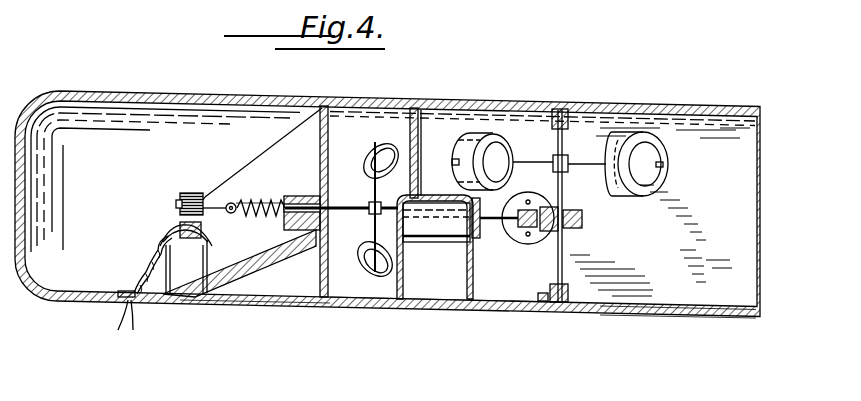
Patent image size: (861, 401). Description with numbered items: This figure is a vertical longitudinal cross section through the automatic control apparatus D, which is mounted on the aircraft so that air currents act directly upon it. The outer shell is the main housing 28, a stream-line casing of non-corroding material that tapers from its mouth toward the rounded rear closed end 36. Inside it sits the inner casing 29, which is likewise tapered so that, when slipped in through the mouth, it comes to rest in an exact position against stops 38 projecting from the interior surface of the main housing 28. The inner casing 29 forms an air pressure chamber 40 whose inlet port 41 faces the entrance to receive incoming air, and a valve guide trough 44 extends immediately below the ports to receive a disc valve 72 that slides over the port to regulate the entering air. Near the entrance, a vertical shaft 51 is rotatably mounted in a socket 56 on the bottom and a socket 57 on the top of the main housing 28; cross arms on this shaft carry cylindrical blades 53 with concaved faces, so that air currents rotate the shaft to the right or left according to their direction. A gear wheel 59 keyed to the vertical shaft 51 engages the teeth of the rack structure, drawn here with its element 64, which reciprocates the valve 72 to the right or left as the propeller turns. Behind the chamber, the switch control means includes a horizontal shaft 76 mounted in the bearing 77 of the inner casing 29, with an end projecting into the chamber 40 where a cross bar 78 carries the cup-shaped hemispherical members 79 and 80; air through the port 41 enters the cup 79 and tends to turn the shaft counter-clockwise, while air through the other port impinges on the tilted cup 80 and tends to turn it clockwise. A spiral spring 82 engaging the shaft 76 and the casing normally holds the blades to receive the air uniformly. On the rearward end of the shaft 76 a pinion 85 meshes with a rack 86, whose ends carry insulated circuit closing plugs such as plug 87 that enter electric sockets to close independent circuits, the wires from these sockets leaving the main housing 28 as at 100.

The main housing 28 is at (662, 318).
The inner casing 29 is at (448, 292).
The rear closed end 36 is at (30, 223).
The stops 38 is at (297, 92).
The air pressure chamber 40 is at (356, 282).
The inlet port 41 is at (437, 223).
The valve guide trough 44 is at (476, 242).
The vertical shaft 51 is at (565, 194).
The blade 53 is at (463, 141).
The socket 56 is at (568, 296).
The socket 57 is at (592, 104).
The gear wheel 59 is at (583, 222).
The gear wheel 64 is at (518, 244).
The valve 72 is at (484, 207).
The shaft 76 is at (220, 190).
The bearing 77 is at (305, 196).
The cross bar 78 is at (372, 230).
The hemispherical member 79 is at (369, 160).
The hemispherical member 80 is at (363, 261).
The spring 82 is at (262, 200).
The pinion 85 is at (194, 182).
The rack 86 is at (179, 225).
The electric circuit closing plug 87 is at (184, 267).
The wire exit 100 is at (121, 303).
The automatic control apparatus D is at (290, 305).